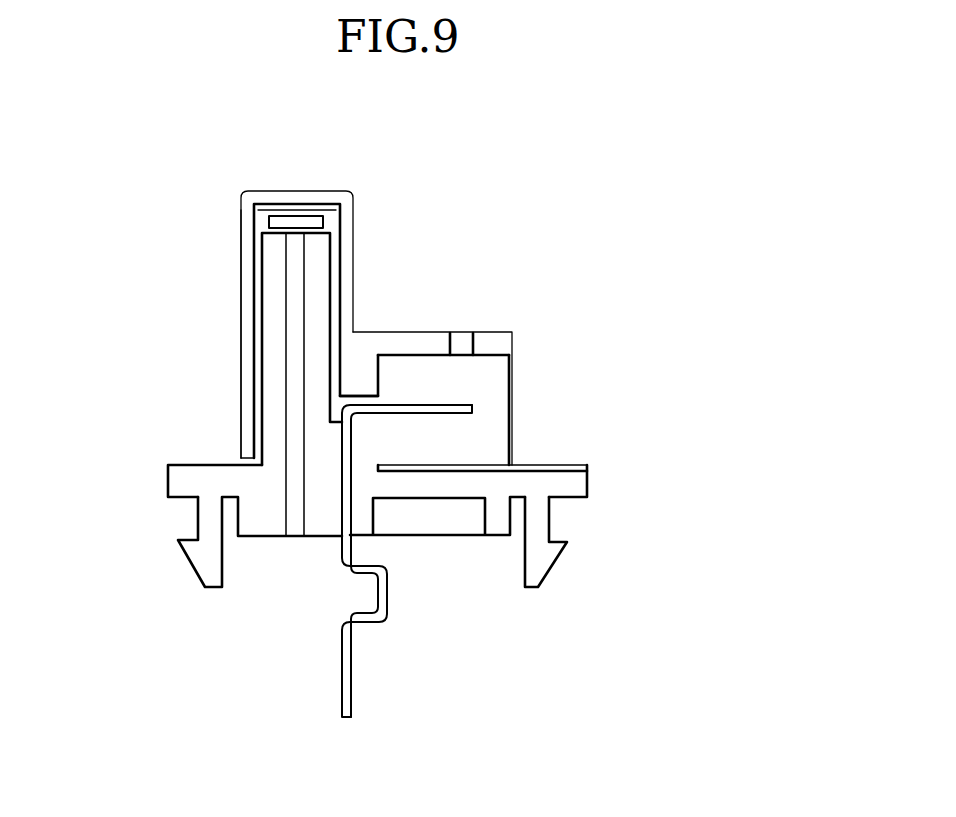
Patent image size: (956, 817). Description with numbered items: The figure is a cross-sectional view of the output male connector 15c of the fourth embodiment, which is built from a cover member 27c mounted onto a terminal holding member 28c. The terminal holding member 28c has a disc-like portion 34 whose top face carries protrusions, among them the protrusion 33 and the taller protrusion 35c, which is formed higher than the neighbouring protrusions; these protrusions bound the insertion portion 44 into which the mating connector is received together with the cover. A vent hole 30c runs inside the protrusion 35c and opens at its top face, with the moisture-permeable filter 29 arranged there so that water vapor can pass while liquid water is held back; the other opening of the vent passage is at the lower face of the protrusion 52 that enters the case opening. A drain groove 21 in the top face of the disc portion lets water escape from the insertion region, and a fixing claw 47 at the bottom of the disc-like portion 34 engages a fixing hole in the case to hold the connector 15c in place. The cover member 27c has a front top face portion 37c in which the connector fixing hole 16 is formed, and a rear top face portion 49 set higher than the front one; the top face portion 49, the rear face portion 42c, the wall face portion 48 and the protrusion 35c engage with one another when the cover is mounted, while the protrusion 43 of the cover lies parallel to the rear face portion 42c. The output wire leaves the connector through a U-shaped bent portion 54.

The output male connector 15c is at (615, 262).
The cover member 27c is at (242, 200).
The rear face portion 42c is at (240, 346).
The wall face portion 48 is at (352, 210).
The top face portion 49 is at (318, 193).
The moisture-permeable filter 29 is at (298, 210).
The protrusion 35c is at (322, 270).
The vent hole 30c is at (296, 540).
The top face portion 37c is at (435, 332).
The connector fixing hole 16 is at (462, 333).
The insertion portion 44 is at (490, 380).
The protrusion 43 is at (368, 383).
The protrusion 33 is at (500, 432).
The drain groove 21 is at (583, 465).
The fixing claw 47 is at (553, 560).
The terminal holding member 28c is at (590, 482).
The disc-like portion 34 is at (172, 478).
The protrusion 52 is at (237, 517).
The U-shaped bent portion 54 is at (385, 600).